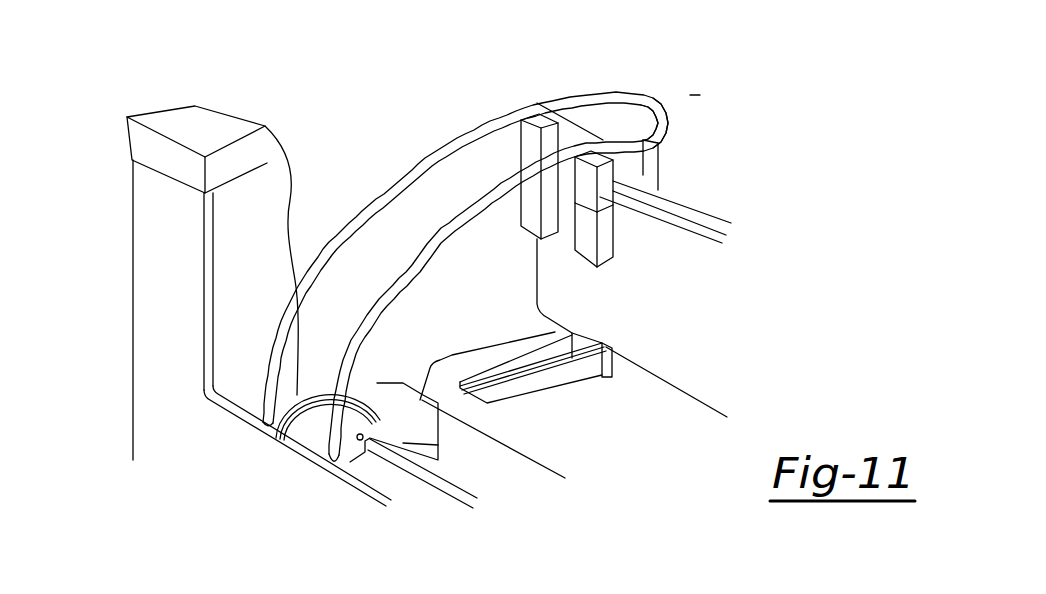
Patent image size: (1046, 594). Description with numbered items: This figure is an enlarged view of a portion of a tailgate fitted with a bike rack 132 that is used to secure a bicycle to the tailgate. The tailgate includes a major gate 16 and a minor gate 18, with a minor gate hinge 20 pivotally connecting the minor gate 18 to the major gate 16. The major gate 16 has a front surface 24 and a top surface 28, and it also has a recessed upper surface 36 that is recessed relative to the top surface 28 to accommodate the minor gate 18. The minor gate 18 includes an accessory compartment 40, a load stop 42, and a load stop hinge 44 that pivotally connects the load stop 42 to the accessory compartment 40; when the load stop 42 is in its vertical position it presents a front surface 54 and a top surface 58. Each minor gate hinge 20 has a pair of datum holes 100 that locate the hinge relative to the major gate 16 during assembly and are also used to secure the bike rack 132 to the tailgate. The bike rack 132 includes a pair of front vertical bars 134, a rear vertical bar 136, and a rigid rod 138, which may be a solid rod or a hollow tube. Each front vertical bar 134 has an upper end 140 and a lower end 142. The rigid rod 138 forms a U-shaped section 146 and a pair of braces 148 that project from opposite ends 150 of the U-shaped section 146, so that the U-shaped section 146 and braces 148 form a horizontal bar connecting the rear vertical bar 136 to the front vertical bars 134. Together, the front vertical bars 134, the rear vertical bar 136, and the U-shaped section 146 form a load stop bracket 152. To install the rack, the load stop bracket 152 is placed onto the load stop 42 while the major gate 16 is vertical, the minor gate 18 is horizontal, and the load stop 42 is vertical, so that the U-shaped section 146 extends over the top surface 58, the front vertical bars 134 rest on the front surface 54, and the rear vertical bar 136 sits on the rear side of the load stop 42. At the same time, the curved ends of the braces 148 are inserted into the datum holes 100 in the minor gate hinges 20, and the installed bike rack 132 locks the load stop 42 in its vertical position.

The major gate 16 is at (121, 255).
The minor gate 18 is at (743, 213).
The minor gate hinge 20 is at (300, 432).
The front surface 24 is at (200, 430).
The top surface 28 is at (193, 123).
The recessed upper surface 36 is at (392, 482).
The accessory compartment 40 is at (686, 430).
The load stop 42 is at (716, 204).
The load stop hinge 44 is at (490, 392).
The front surface 54 is at (660, 347).
The top surface 58 is at (707, 210).
The datum hole 100 is at (266, 425).
The bike rack 132 is at (705, 52).
The front vertical bar 134 is at (573, 210).
The rear vertical bar 136 is at (650, 148).
The rigid rod 138 is at (514, 108).
The upper end 140 is at (607, 172).
The lower end 142 is at (607, 250).
The U-shaped section 146 is at (652, 108).
The brace 148 is at (378, 292).
The end of U-shaped section 150 is at (603, 140).
The load stop bracket 152 is at (620, 85).